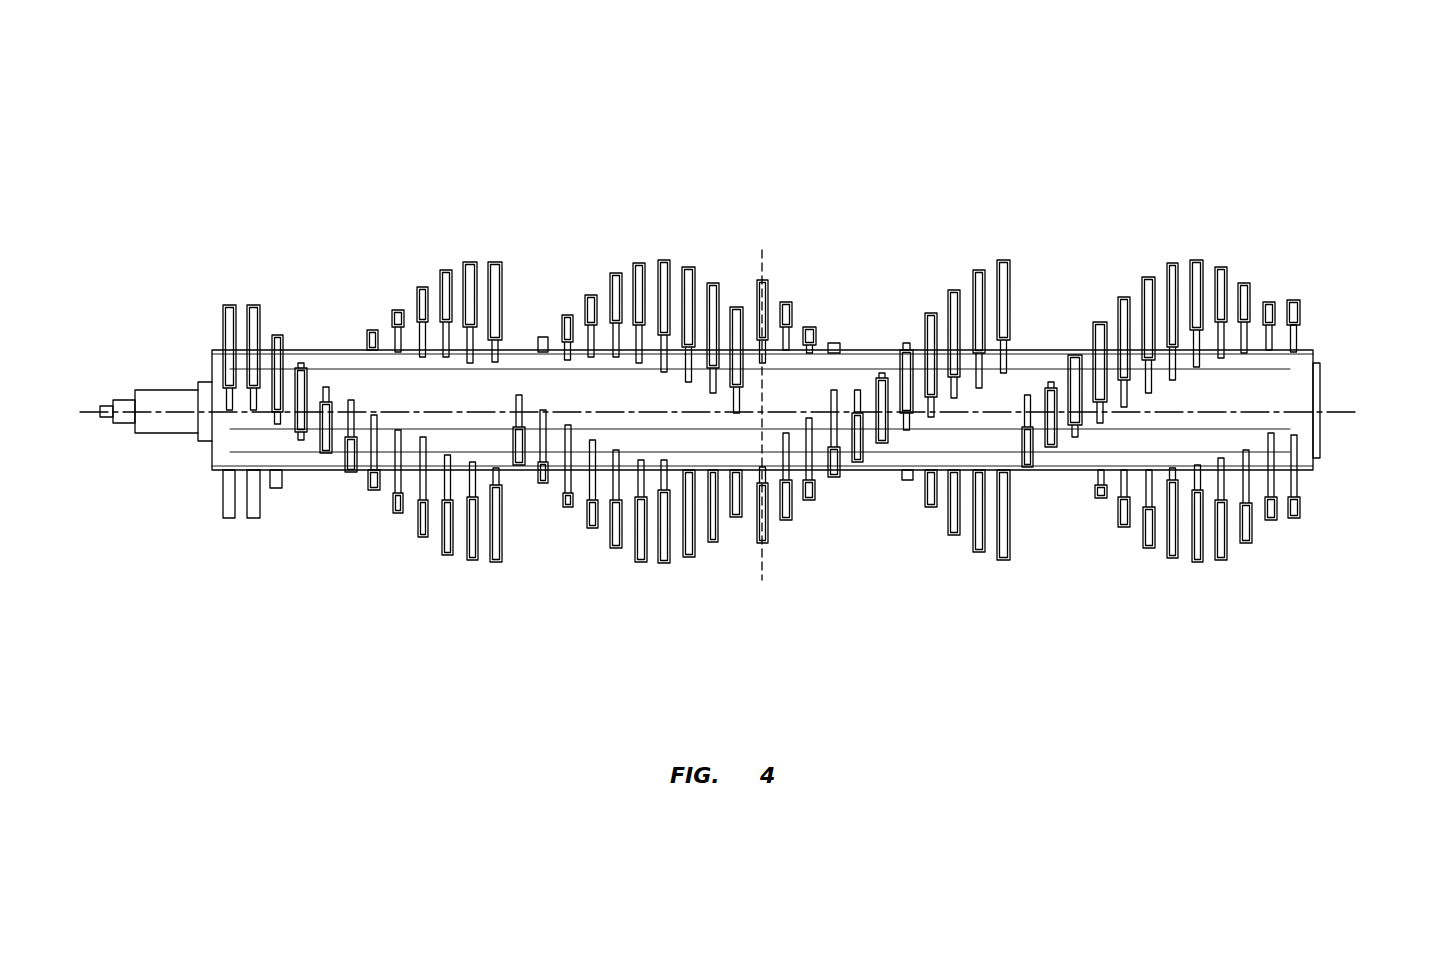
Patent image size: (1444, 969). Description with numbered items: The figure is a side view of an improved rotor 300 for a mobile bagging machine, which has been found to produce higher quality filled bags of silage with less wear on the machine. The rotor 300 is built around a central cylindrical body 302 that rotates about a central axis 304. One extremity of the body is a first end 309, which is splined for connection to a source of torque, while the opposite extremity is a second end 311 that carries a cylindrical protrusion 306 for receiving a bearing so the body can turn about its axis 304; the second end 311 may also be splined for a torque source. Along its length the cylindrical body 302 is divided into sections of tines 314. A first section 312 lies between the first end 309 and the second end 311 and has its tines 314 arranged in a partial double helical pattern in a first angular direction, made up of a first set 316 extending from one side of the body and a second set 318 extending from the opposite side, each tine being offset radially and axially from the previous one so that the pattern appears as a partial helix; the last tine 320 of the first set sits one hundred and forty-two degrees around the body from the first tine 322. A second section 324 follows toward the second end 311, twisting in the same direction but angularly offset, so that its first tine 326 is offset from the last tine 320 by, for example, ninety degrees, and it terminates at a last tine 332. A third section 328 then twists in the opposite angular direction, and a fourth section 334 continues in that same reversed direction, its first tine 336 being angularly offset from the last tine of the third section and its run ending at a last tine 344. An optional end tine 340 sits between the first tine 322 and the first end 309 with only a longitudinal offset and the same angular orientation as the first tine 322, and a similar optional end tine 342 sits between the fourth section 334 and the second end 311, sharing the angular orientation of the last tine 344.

The rotor 300 is at (667, 148).
The central cylindrical body 302 is at (1046, 362).
The central axis 304 is at (1340, 412).
The cylindrical protrusion 306 is at (140, 390).
The first end 309 is at (1300, 297).
The second end 311 is at (170, 449).
The first section of tines 312 is at (1272, 582).
The tines 314 is at (664, 260).
The first set of tines 316 is at (1195, 252).
The second set of tines 318 is at (1280, 540).
The last tine of the first set 320 is at (1023, 433).
The first tine of the first set 322 is at (1273, 518).
The second section of tines 324 is at (1012, 250).
The first tine of the second section 326 is at (1002, 560).
The third section of tines 328 is at (757, 582).
The last tine of the second section 332 is at (760, 280).
The fourth section of tines 334 is at (508, 273).
The first tine of the fourth section 336 is at (498, 313).
The end tine 340 is at (1297, 332).
The end tine 342 is at (224, 305).
The last tine of the fourth section 344 is at (261, 317).